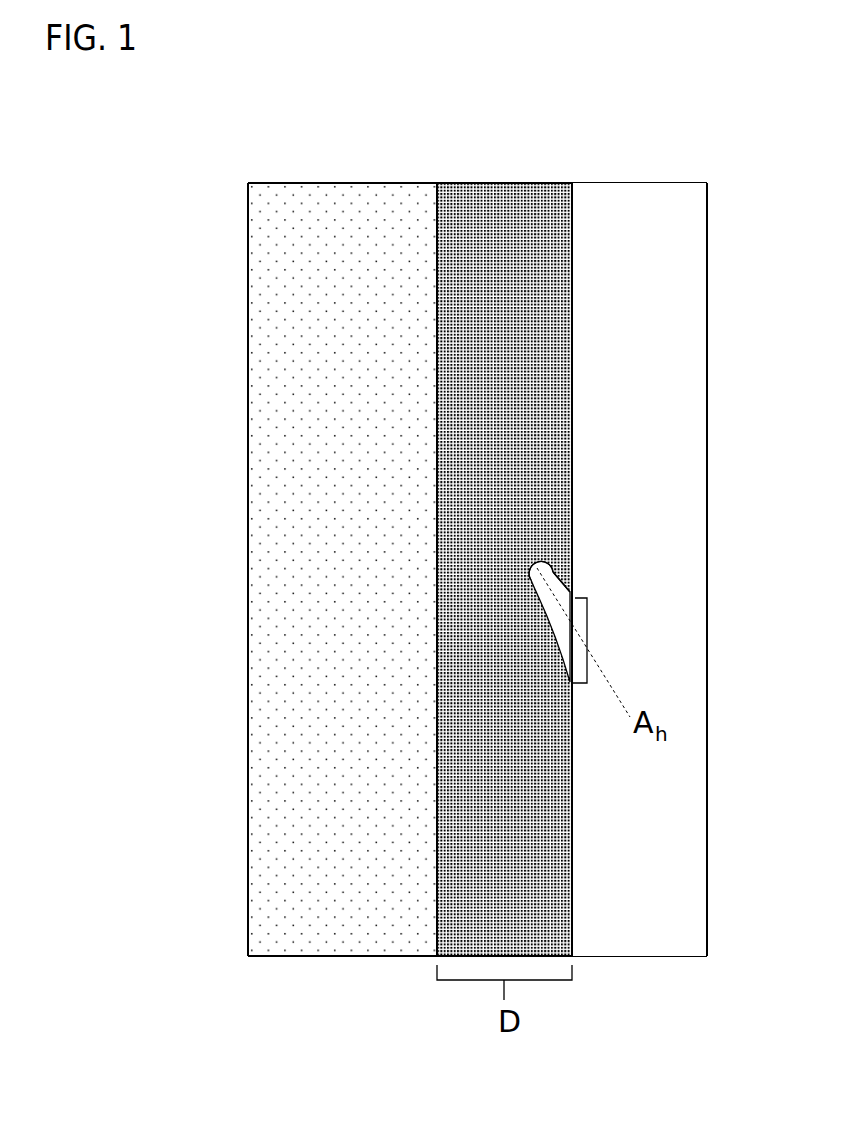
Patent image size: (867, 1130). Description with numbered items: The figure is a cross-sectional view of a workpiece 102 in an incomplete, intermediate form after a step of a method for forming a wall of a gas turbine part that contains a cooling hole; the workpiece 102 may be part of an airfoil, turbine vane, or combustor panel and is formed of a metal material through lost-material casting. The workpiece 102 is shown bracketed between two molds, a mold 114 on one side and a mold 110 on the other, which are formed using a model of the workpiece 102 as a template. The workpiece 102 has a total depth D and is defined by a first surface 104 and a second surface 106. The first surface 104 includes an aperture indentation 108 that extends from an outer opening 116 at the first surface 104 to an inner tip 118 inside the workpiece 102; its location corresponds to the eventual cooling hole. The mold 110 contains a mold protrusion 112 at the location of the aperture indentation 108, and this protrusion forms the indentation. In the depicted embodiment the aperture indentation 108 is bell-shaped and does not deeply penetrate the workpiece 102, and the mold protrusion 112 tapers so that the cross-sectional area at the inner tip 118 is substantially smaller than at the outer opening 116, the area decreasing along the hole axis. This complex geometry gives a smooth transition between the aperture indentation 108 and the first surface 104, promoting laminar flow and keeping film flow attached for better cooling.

The workpiece 102 is at (533, 183).
The first surface 104 is at (572, 408).
The second surface 106 is at (437, 887).
The aperture indentation 108 is at (540, 600).
The mold 110 is at (689, 183).
The mold protrusion 112 is at (575, 588).
The mold 114 is at (333, 183).
The outer opening 116 is at (588, 628).
The inner tip 118 is at (537, 564).